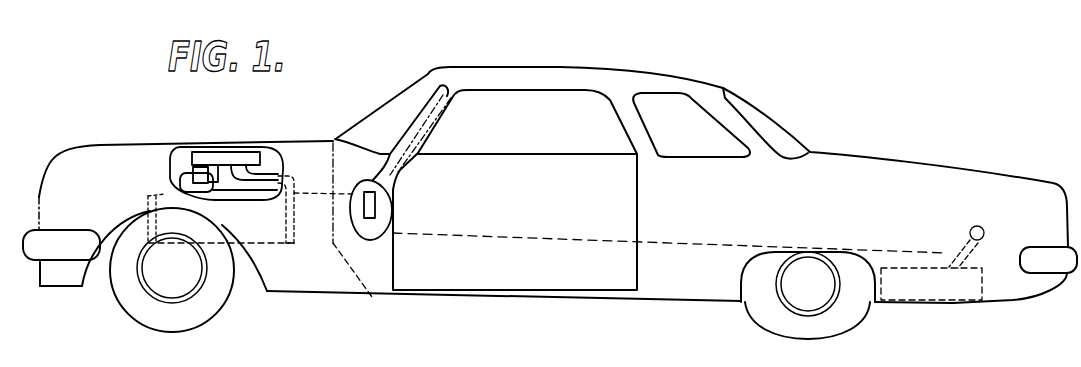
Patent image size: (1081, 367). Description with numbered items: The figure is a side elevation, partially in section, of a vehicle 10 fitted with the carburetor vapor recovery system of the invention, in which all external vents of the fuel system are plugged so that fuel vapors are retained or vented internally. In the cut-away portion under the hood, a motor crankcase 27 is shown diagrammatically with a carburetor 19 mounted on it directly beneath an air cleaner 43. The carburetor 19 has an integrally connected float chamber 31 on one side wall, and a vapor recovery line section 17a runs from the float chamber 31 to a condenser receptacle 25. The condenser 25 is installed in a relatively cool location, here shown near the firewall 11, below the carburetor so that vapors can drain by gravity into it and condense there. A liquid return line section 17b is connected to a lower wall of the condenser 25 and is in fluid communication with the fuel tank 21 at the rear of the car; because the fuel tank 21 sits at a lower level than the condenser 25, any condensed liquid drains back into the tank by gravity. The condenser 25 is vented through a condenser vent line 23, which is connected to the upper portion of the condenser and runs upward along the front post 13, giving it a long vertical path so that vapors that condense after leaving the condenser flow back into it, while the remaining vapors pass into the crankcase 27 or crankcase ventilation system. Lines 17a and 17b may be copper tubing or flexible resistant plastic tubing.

The vehicle 10 is at (565, 67).
The firewall 11 is at (347, 268).
The front post 13 is at (437, 120).
The vapor recovery line section 17a is at (178, 185).
The liquid return line section 17b is at (493, 233).
The carburetor 19 is at (220, 168).
The fuel tank 21 is at (955, 302).
The vent line 23 is at (292, 219).
The condenser receptacle 25 is at (375, 203).
The motor crankcase 27 is at (270, 245).
The float chamber 31 is at (196, 172).
The air cleaner 43 is at (245, 153).